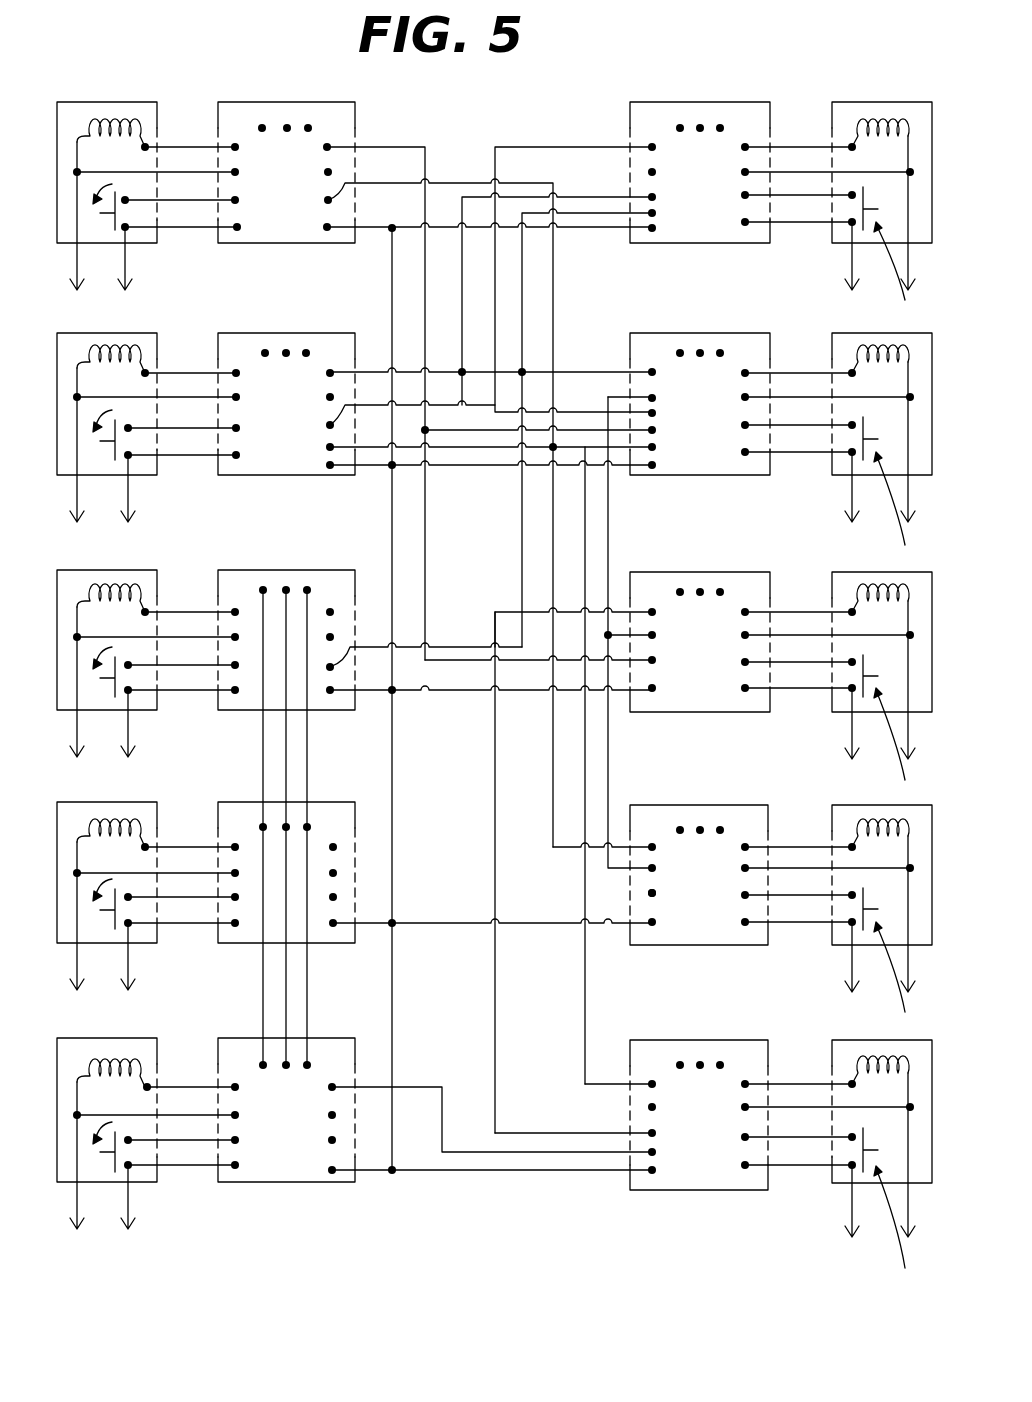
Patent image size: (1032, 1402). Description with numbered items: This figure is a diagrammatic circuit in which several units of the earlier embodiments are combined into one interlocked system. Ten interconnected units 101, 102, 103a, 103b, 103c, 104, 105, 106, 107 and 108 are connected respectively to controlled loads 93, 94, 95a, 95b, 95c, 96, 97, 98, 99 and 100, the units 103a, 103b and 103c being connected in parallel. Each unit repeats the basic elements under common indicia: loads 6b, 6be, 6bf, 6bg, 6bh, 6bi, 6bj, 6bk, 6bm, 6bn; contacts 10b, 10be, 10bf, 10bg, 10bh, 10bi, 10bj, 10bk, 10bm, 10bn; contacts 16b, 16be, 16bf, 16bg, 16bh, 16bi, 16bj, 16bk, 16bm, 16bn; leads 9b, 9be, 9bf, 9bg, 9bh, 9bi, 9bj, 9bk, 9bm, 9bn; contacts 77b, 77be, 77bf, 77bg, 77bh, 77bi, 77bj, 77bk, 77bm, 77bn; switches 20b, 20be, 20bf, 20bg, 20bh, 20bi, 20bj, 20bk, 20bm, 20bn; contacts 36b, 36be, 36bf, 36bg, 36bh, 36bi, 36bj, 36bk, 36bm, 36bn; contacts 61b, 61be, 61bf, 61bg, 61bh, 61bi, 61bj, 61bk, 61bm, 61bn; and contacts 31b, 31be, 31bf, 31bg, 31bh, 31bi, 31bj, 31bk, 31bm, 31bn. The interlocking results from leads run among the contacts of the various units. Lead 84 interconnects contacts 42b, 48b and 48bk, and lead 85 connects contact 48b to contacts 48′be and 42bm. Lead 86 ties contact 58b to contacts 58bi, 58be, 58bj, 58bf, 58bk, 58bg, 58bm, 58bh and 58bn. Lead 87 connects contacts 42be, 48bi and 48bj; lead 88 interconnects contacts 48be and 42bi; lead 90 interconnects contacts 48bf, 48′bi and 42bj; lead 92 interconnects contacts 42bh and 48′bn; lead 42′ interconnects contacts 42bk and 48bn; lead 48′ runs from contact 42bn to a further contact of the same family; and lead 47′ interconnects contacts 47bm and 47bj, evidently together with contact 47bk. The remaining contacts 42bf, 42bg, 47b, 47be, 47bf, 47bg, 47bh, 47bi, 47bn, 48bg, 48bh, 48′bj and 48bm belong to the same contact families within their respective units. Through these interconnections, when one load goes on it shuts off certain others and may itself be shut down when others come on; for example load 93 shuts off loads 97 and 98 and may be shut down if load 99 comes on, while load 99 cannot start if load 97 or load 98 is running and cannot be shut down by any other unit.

The relay unit 93 is at (62, 109).
The relay unit 94 is at (82, 334).
The relay unit 95a is at (124, 575).
The relay unit 95b is at (116, 805).
The relay unit 95c is at (102, 1040).
The relay unit 96 is at (865, 104).
The relay unit 97 is at (831, 332).
The relay unit 98 is at (836, 580).
The relay unit 99 is at (840, 810).
The relay unit 100 is at (854, 1040).
The contact unit 101 is at (230, 98).
The contact unit 102 is at (218, 362).
The contact unit 103a is at (216, 598).
The contact unit 103b is at (258, 788).
The contact unit 103c is at (252, 1030).
The contact unit 104 is at (712, 245).
The contact unit 105 is at (700, 478).
The contact unit 106 is at (680, 716).
The contact unit 107 is at (705, 948).
The contact unit 108 is at (705, 1193).
The conductor 84 is at (425, 148).
The conductor 85 is at (462, 182).
The conductor 86 is at (390, 234).
The conductor 87 is at (362, 352).
The conductor 88 is at (362, 386).
The conductor 90 is at (352, 632).
The conductor 92 is at (370, 1100).
The conductor 42′ is at (498, 882).
The conductor 47′ is at (607, 558).
The conductor 48′ is at (583, 524).
The relay coil 6b is at (118, 125).
The relay coil 6be is at (115, 352).
The relay coil 6bf is at (118, 590).
The relay coil 6bg is at (118, 825).
The relay coil 6bh is at (118, 1065).
The relay coil 6bi is at (895, 125).
The relay coil 6bj is at (895, 352).
The relay coil 6bk is at (895, 590).
The relay coil 6bm is at (895, 825).
The relay coil 6bn is at (895, 1062).
The coil terminal lead 10b is at (218, 142).
The coil terminal lead 10be is at (234, 378).
The coil terminal lead 10bf is at (232, 617).
The coil terminal lead 10bg is at (232, 845).
The coil terminal lead 10bh is at (232, 1084).
The coil terminal lead 10bi is at (742, 148).
The coil terminal lead 10bj is at (748, 377).
The coil terminal lead 10bk is at (750, 611).
The coil terminal lead 10bm is at (750, 846).
The coil terminal lead 10bn is at (750, 1082).
The common lead 16b is at (238, 174).
The common lead 16be is at (235, 402).
The common lead 16bf is at (232, 642).
The common lead 16bg is at (232, 872).
The common lead 16bh is at (232, 1113).
The common lead 16bi is at (758, 175).
The common lead 16bj is at (750, 402).
The common lead 16bk is at (752, 636).
The common lead 16bm is at (752, 868).
The common lead 16bn is at (752, 1106).
The switch contact lead 9b is at (240, 204).
The switch contact lead 9be is at (235, 433).
The switch contact lead 9bf is at (232, 670).
The switch contact lead 9bg is at (232, 896).
The switch contact lead 9bh is at (232, 1138).
The switch contact lead 9bi is at (745, 198).
The switch contact lead 9bj is at (752, 430).
The switch contact lead 9bk is at (752, 662).
The switch contact lead 9bm is at (752, 895).
The switch contact lead 9bn is at (752, 1136).
The switch contact lead 77b is at (238, 235).
The switch contact lead 77be is at (238, 462).
The switch contact lead 77bf is at (235, 696).
The switch contact lead 77bg is at (232, 921).
The switch contact lead 77bh is at (238, 1172).
The switch contact lead 77bi is at (745, 226).
The switch contact lead 77bj is at (745, 456).
The switch contact lead 77bk is at (750, 688).
The switch contact lead 77bm is at (750, 921).
The switch contact lead 77bn is at (745, 1170).
The armature switch 20b is at (119, 200).
The armature switch 20be is at (124, 429).
The armature switch 20bf is at (122, 668).
The armature switch 20bg is at (124, 900).
The armature switch 20bh is at (124, 1143).
The armature switch 20bi is at (871, 249).
The armature switch 20bj is at (866, 486).
The armature switch 20bk is at (868, 722).
The armature switch 20bm is at (870, 956).
The armature switch 20bn is at (864, 1204).
The contact 36b is at (262, 124).
The contact 36be is at (270, 325).
The contact 36bf is at (263, 586).
The contact 36bg is at (265, 822).
The contact 36bh is at (263, 1061).
The contact 36bi is at (680, 124).
The contact 36bj is at (680, 349).
The contact 36bk is at (680, 588).
The contact 36bm is at (680, 826).
The contact 36bn is at (680, 1061).
The contact 61b is at (287, 124).
The contact 61be is at (286, 349).
The contact 61bf is at (286, 586).
The contact 61bg is at (287, 822).
The contact 61bh is at (286, 1061).
The contact 61bi is at (700, 124).
The contact 61bj is at (700, 349).
The contact 61bk is at (700, 588).
The contact 61bm is at (700, 826).
The contact 61bn is at (700, 1061).
The contact 31b is at (308, 124).
The contact 31be is at (306, 349).
The contact 31bf is at (307, 586).
The contact 31bg is at (308, 822).
The contact 31bh is at (307, 1061).
The contact 31bi is at (720, 124).
The contact 31bj is at (720, 349).
The contact 31bk is at (720, 588).
The contact 31bm is at (720, 826).
The contact 31bn is at (720, 1061).
The contact 42b is at (333, 150).
The contact 42be is at (326, 378).
The contact 42bf is at (332, 610).
The contact 42bg is at (335, 845).
The contact 42bh is at (360, 1087).
The contact 42bi is at (648, 146).
The contact 42bj is at (650, 370).
The contact 42bk is at (655, 615).
The contact 42bm is at (655, 851).
The contact 42bn is at (648, 1088).
The contact 47b is at (328, 176).
The contact 47be is at (330, 401).
The contact 47bf is at (332, 635).
The contact 47bg is at (335, 871).
The contact 47bh is at (330, 1116).
The contact 47bi is at (648, 172).
The contact 47bj is at (618, 394).
The contact 47bk is at (654, 639).
The contact 47bm is at (650, 891).
The contact 47bn is at (655, 1105).
The contact 48b is at (345, 190).
The contact 48be is at (328, 430).
The contact 48′be is at (328, 452).
The contact 48bf is at (357, 668).
The contact 48bg is at (335, 895).
The contact 48bh is at (332, 1142).
The contact 48bi is at (656, 200).
The contact 48′bi is at (650, 218).
The contact 48bj is at (656, 410).
The contact 48′bj is at (656, 428).
The contact 48bk is at (654, 664).
The contact 48bm is at (655, 896).
The contact 48bn is at (655, 1131).
The contact 48′bn is at (655, 1155).
The contact 58b is at (326, 231).
The contact 58be is at (332, 470).
The contact 58bf is at (330, 694).
The contact 58bg is at (335, 927).
The contact 58bh is at (333, 1175).
The contact 58bi is at (652, 232).
The contact 58bj is at (650, 470).
The contact 58bk is at (654, 692).
The contact 58bm is at (652, 926).
The contact 58bn is at (655, 1174).